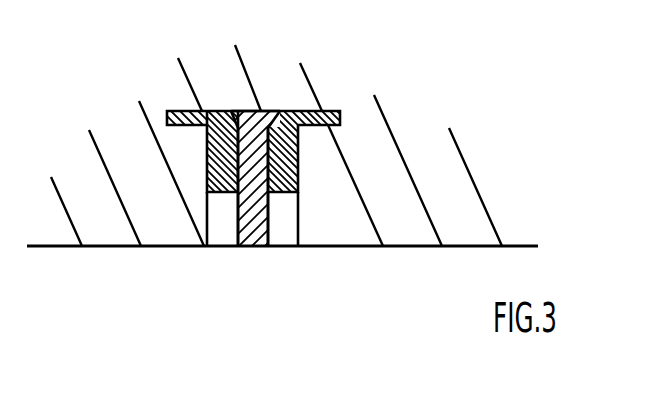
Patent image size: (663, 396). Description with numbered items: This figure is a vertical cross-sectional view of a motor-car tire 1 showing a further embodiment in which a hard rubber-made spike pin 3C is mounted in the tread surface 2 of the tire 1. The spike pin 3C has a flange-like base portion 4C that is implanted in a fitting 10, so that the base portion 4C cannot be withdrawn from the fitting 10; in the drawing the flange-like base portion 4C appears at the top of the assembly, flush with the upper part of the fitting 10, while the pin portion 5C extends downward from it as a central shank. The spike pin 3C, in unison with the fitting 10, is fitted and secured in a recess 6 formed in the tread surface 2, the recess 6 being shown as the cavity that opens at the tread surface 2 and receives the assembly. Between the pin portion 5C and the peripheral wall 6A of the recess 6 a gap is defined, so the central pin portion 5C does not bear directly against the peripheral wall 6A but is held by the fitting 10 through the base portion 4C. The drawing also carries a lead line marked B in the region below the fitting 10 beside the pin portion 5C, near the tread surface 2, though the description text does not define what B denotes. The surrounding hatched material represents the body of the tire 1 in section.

The motor-car tire 1 is at (438, 182).
The tread surface 2 is at (346, 247).
The fitting 10 is at (332, 112).
The flange-like base portion 4C is at (259, 110).
The pin portion 5C is at (249, 239).
The spike pin 3C is at (237, 212).
The bore gap B is at (229, 238).
The peripheral wall 6A is at (289, 210).
The recess 6 is at (312, 212).